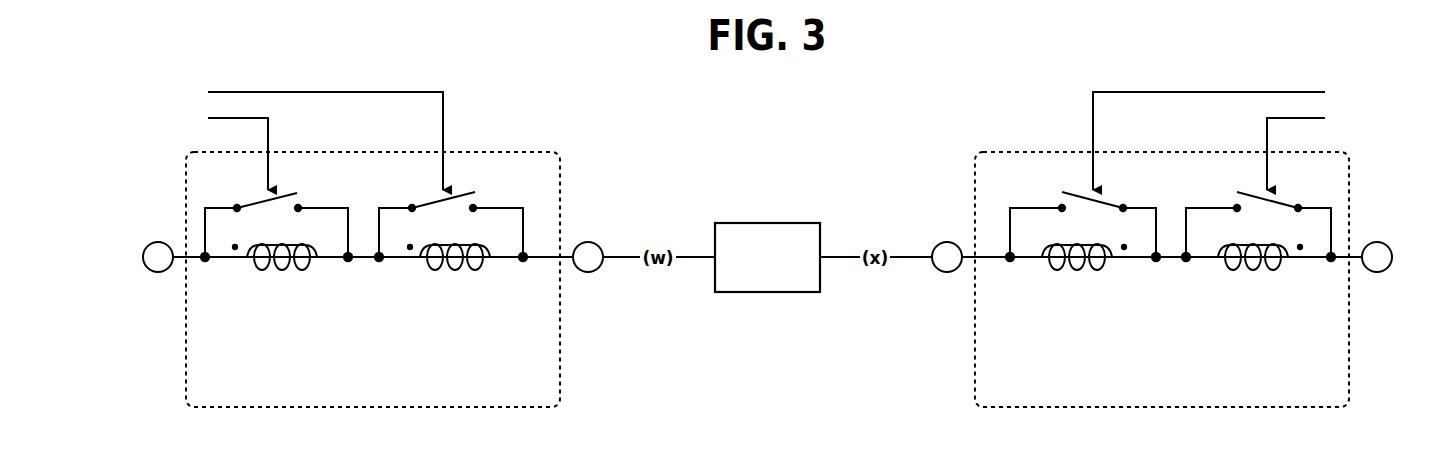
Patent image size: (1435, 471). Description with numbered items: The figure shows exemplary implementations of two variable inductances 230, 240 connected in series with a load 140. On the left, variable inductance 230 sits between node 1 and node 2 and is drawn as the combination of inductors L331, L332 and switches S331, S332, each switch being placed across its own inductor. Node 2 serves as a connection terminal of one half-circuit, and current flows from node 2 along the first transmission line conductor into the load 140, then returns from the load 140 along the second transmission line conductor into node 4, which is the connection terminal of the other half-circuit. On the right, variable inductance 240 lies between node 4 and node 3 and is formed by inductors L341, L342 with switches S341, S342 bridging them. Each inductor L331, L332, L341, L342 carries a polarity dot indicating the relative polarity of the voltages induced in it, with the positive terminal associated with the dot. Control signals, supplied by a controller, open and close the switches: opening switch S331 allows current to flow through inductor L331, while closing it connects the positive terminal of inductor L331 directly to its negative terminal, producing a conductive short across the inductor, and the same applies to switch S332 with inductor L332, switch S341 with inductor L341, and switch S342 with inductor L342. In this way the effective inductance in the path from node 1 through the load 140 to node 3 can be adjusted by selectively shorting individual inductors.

The node 1 is at (158, 257).
The node 2 is at (588, 257).
The node 3 is at (1377, 257).
The node 4 is at (947, 257).
The load 140 is at (767, 257).
The variable inductance 230 is at (341, 243).
The variable inductance 240 is at (1193, 243).
The switch S331 is at (279, 221).
The switch S332 is at (453, 221).
The switch S341 is at (1256, 221).
The switch S342 is at (1081, 221).
The inductor L331 is at (275, 272).
The inductor L332 is at (449, 272).
The inductor L341 is at (1260, 272).
The inductor L342 is at (1084, 272).